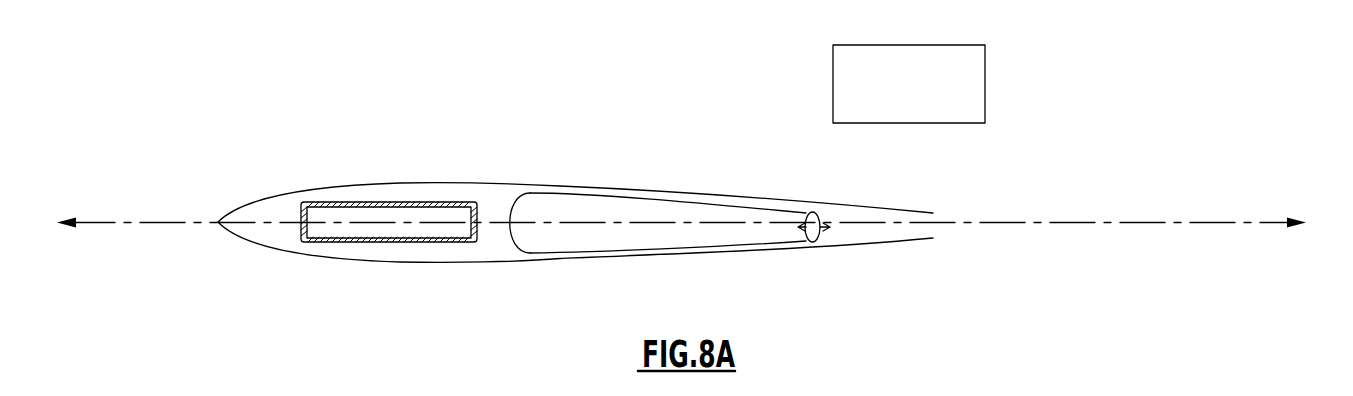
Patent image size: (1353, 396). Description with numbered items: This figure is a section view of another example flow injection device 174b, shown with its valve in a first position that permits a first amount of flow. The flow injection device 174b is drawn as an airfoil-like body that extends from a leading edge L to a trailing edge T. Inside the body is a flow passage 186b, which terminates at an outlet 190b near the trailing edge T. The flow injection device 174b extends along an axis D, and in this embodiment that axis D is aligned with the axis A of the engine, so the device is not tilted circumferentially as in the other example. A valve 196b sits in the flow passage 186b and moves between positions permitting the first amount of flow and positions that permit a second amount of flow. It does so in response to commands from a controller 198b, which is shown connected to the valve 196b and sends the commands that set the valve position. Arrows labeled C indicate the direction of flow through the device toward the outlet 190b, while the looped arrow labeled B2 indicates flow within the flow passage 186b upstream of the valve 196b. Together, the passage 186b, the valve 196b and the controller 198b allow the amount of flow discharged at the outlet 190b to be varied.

The flow injection device 174b is at (517, 183).
The flow passage 186b is at (738, 221).
The outlet 190b is at (946, 236).
The valve 196b is at (819, 240).
The controller 198b is at (822, 208).
The leading edge L is at (203, 198).
The trailing edge T is at (951, 200).
The chordwise flow direction C is at (728, 154).
The recirculating flow B2 is at (668, 238).
The axis of the engine A is at (1269, 222).
The axis of the flow injection device D is at (1063, 222).